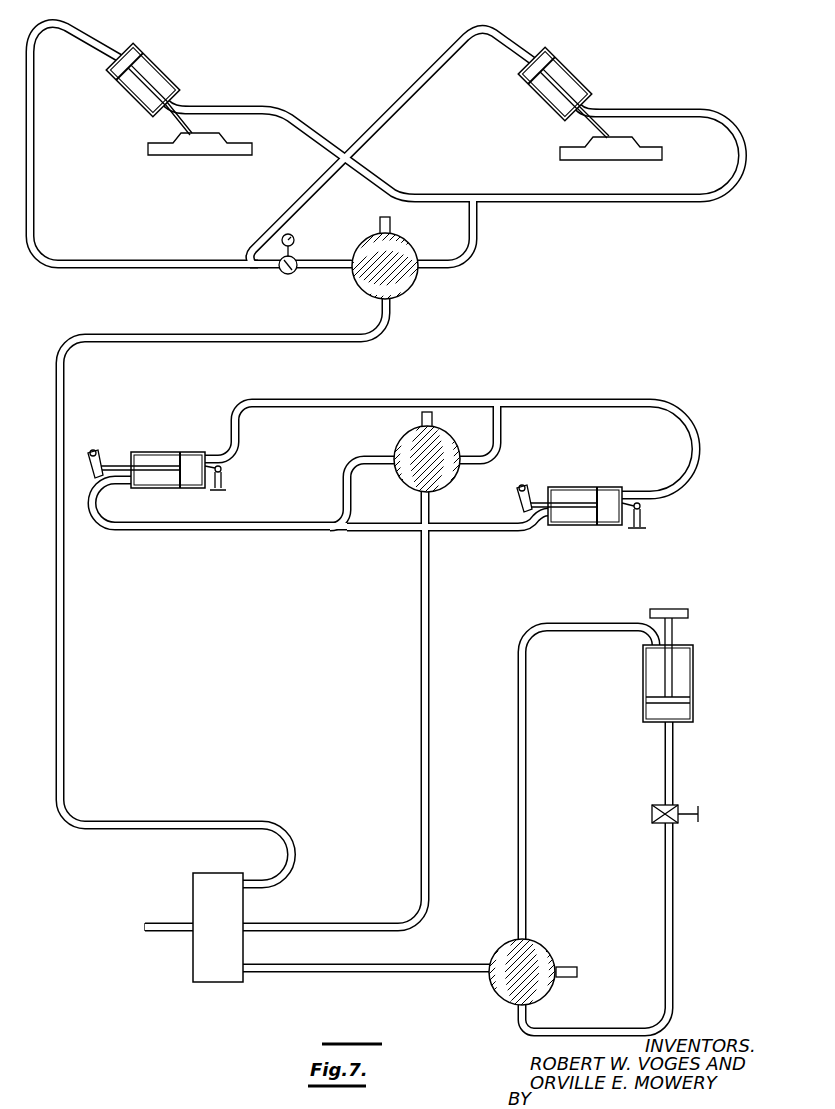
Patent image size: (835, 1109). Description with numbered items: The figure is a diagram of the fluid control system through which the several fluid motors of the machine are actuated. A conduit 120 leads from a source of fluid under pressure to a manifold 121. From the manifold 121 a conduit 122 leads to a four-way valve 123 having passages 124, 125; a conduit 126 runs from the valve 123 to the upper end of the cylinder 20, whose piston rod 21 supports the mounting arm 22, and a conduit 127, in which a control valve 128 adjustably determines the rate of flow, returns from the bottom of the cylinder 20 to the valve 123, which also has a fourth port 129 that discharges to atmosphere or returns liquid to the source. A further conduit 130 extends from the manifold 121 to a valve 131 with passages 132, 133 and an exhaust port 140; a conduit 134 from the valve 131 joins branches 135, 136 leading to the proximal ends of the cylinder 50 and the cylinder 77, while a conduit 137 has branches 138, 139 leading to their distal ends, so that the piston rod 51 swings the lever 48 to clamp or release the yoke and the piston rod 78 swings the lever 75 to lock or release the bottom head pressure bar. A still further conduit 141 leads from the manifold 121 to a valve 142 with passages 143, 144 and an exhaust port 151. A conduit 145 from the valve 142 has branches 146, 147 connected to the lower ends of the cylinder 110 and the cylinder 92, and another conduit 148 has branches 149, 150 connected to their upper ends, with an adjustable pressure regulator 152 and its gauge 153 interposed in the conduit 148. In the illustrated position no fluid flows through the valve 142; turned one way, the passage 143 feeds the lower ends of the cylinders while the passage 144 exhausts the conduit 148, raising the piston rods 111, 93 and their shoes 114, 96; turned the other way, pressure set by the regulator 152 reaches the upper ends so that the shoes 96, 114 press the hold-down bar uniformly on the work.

The cylinder 20 is at (695, 685).
The piston rod 21 is at (675, 634).
The mounting arm 22 is at (687, 612).
The lever 48 is at (525, 480).
The cylinder 50 is at (577, 525).
The piston rod 51 is at (538, 503).
The lever 75 is at (118, 427).
The cylinder 77 is at (163, 453).
The piston rod 78 is at (118, 464).
The fluid cylinder 92 is at (152, 63).
The piston rod 93 is at (175, 115).
The shoe 96 is at (217, 157).
The fluid cylinder 110 is at (573, 78).
The piston rod 111 is at (588, 122).
The shoe 114 is at (627, 160).
The conduit 120 is at (176, 898).
The manifold 121 is at (200, 962).
The conduit 122 is at (330, 977).
The four-way valve 123 is at (505, 958).
The passage 124 is at (502, 948).
The passage 125 is at (572, 915).
The conduit 126 is at (520, 772).
The conduit 127 is at (670, 897).
The control valve 128 is at (677, 808).
The fourth port 129 is at (600, 948).
The conduit 130 is at (421, 711).
The valve 131 is at (426, 469).
The passage 132 is at (405, 478).
The passage 133 is at (448, 478).
The conduit 134 is at (502, 437).
The branch 135 is at (602, 403).
The branch 136 is at (345, 398).
The conduit 137 is at (345, 483).
The branch 138 is at (483, 532).
The branch 139 is at (145, 528).
The exhaust port 140 is at (422, 420).
The conduit 141 is at (57, 548).
The valve 142 is at (387, 267).
The passage 143 is at (405, 292).
The passage 144 is at (410, 247).
The conduit 145 is at (478, 240).
The branch 146 is at (718, 113).
The branch 147 is at (310, 130).
The conduit 148 is at (322, 268).
The branch 149 is at (427, 75).
The branch 150 is at (33, 192).
The exhaust port 151 is at (380, 220).
The adjustable pressure regulator 152 is at (283, 272).
The gauge 153 is at (296, 235).